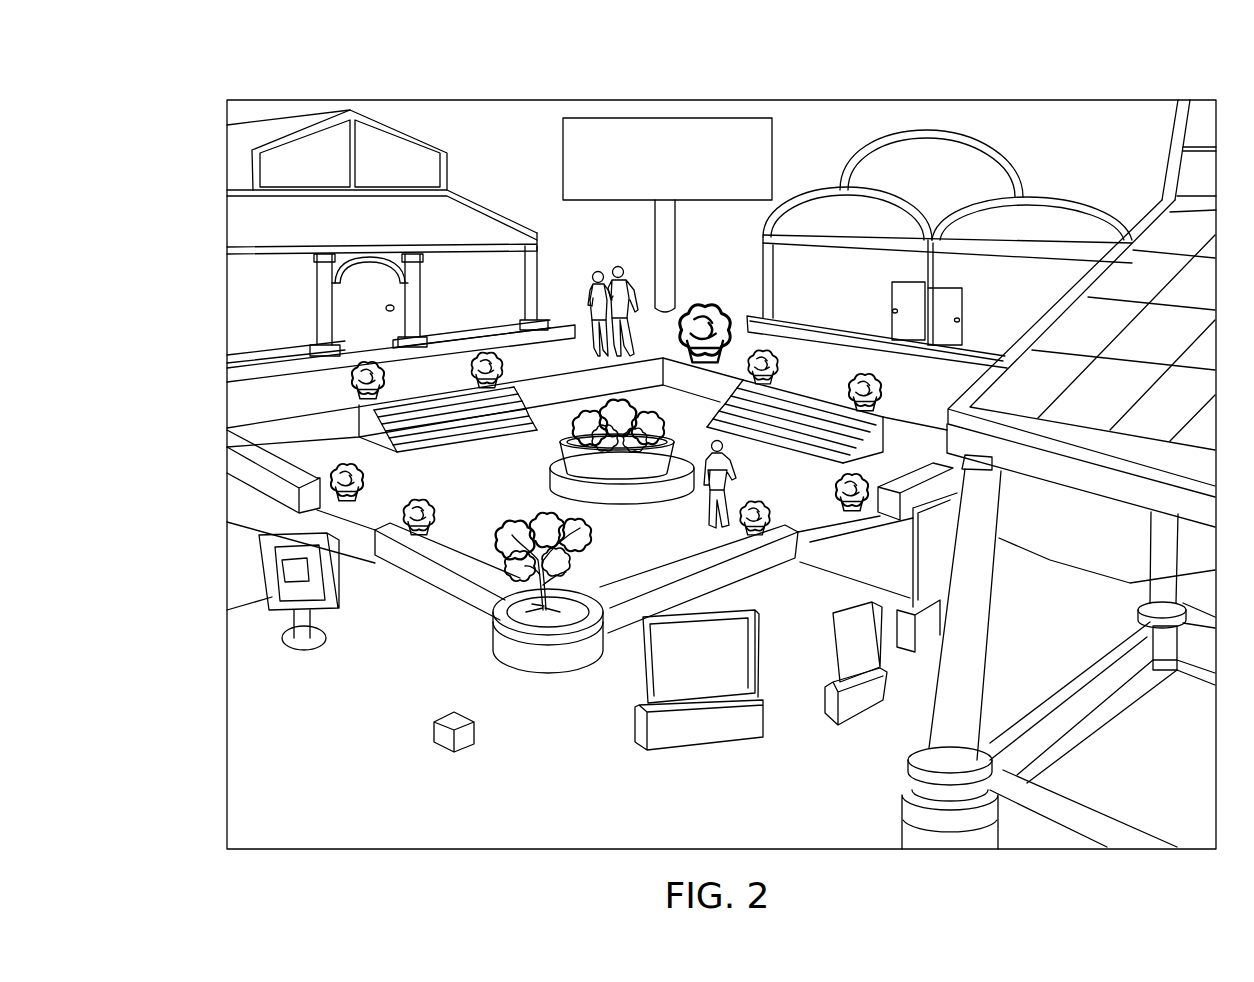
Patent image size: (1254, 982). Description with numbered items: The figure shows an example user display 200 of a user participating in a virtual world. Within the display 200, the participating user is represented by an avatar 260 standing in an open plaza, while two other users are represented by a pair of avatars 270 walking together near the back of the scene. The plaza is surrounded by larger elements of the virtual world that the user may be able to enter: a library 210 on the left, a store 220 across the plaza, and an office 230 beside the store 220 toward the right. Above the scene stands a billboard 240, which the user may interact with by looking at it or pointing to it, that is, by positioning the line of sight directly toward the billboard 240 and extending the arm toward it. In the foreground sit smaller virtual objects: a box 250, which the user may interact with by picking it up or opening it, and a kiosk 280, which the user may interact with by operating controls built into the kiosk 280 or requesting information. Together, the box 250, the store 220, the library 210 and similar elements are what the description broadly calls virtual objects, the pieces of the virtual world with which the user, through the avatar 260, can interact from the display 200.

The user display 200 is at (245, 73).
The library 210 is at (420, 138).
The store 220 is at (890, 190).
The office 230 is at (1053, 197).
The billboard 240 is at (772, 146).
The box 250 is at (408, 733).
The avatar 260 is at (733, 450).
The avatars 270 is at (589, 273).
The kiosk 280 is at (346, 587).